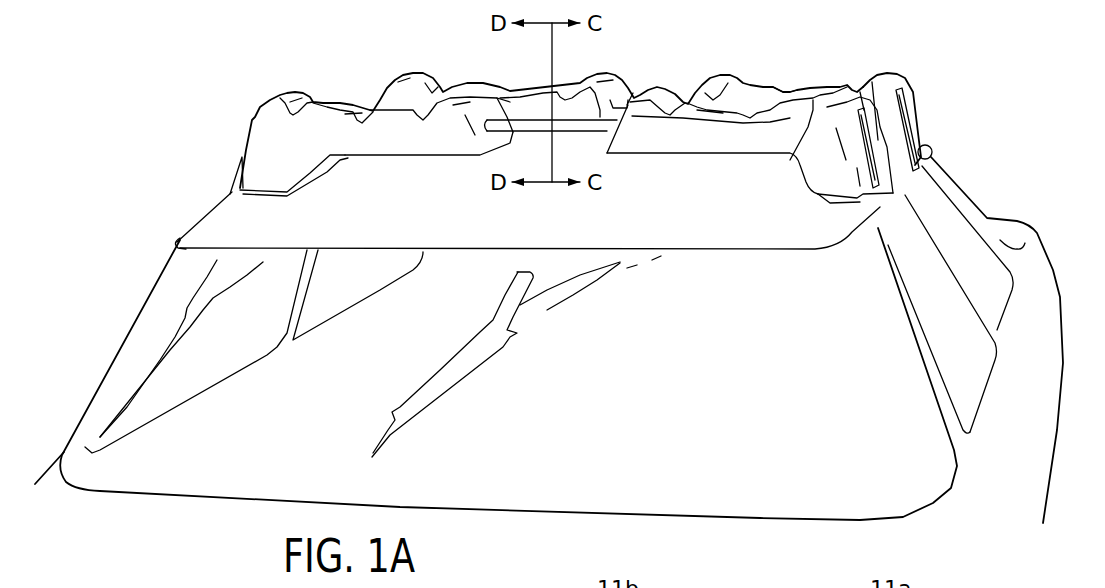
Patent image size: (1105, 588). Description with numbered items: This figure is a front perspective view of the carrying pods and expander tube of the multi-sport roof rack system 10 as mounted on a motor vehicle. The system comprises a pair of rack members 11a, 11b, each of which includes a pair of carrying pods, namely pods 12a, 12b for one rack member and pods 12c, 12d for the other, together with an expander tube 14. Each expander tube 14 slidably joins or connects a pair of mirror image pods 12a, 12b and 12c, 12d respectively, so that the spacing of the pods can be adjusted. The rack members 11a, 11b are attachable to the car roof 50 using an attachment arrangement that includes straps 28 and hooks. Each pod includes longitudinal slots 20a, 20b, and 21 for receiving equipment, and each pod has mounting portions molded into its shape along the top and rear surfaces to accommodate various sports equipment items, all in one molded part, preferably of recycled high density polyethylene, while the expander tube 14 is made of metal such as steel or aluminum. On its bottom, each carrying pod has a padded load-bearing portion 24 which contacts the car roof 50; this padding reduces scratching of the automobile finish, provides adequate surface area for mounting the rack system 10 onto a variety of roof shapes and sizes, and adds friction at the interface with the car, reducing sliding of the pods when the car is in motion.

The multi-sport roof rack system 10 is at (212, 145).
The rack member 11a is at (248, 119).
The rack member 11b is at (385, 84).
The carrying pod 12a is at (274, 97).
The carrying pod 12b is at (697, 147).
The carrying pod 12c is at (604, 82).
The carrying pod 12d is at (886, 74).
The expander tube 14 is at (545, 123).
The longitudinal slot 20a is at (664, 104).
The longitudinal slot 20b is at (790, 157).
The longitudinal slot 21 is at (790, 90).
The padded load-bearing portion 24 is at (832, 203).
The strap 28 is at (903, 153).
The car roof 50 is at (392, 223).